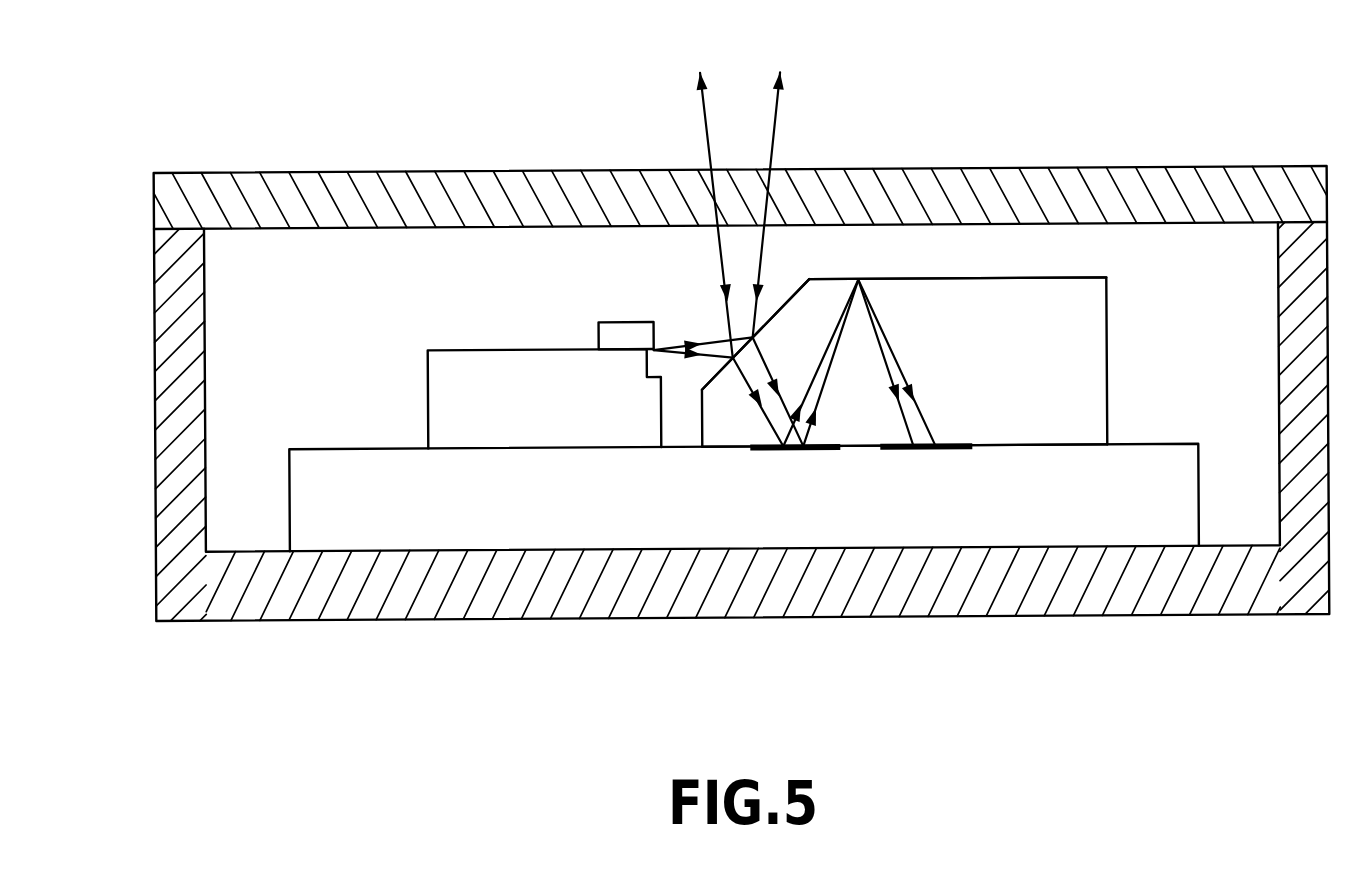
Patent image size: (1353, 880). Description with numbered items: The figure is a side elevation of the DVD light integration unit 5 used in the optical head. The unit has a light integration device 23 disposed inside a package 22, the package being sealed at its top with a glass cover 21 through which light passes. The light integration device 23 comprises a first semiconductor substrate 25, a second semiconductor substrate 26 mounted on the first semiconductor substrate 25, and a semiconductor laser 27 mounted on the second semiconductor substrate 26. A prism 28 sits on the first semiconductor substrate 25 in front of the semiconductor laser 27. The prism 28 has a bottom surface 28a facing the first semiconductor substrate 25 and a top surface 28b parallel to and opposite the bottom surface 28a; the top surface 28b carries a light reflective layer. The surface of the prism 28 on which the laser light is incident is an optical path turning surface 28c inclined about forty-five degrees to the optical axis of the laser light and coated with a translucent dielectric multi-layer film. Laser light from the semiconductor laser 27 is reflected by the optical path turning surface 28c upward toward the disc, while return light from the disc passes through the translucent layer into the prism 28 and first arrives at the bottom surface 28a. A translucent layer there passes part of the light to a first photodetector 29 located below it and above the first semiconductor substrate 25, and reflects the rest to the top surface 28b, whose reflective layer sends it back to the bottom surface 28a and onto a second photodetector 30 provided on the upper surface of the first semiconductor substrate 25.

The DVD light integration unit 5 is at (1044, 150).
The glass cover 21 is at (1137, 189).
The package 22 is at (1103, 594).
The light integration device 23 is at (590, 297).
The first semiconductor substrate 25 is at (707, 537).
The second semiconductor substrate 26 is at (440, 377).
The semiconductor laser 27 is at (636, 333).
The prism 28 is at (938, 298).
The bottom surface 28a is at (1000, 448).
The top surface 28b is at (990, 285).
The optical path turning surface 28c is at (792, 297).
The first photodetector 29 is at (823, 454).
The second photodetector 30 is at (945, 454).